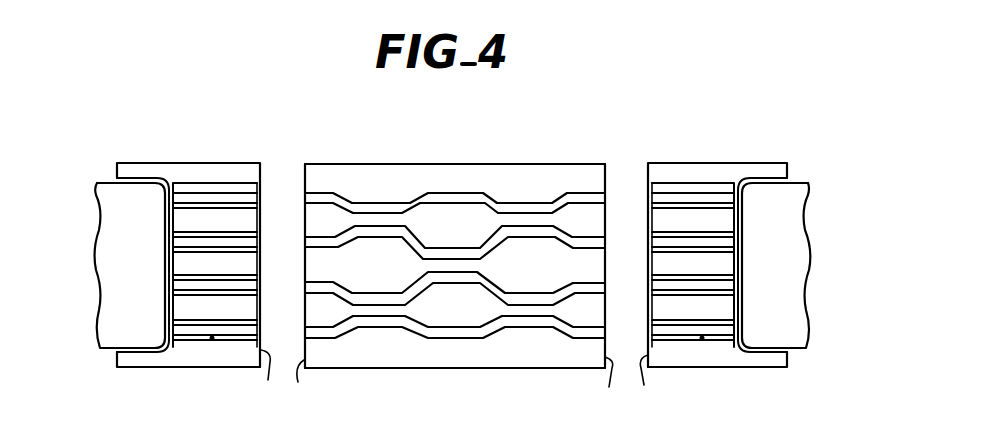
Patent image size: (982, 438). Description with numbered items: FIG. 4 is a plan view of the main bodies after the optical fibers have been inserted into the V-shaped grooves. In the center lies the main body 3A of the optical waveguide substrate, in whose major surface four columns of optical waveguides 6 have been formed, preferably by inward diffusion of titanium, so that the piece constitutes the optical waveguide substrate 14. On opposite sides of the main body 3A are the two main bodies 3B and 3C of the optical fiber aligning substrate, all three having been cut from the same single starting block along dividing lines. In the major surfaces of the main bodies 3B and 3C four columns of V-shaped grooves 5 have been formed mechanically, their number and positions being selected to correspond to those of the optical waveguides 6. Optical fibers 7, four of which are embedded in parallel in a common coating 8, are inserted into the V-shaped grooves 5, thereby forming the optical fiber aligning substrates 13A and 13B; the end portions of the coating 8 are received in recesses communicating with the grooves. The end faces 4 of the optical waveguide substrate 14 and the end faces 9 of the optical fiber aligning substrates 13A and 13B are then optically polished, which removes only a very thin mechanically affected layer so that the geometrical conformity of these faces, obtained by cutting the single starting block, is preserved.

The main body of the optical waveguide substrate 3A is at (487, 362).
The main body of the optical fiber aligning substrate 3B is at (205, 172).
The main body of the optical fiber aligning substrate 3C is at (744, 172).
The end faces of the optical waveguide substrate 4 is at (455, 286).
The V-shaped grooves 5 is at (212, 341).
The optical waveguides 6 is at (491, 248).
The optical fibers 7 is at (224, 240).
The coating 8 is at (112, 190).
The end faces of the optical fiber aligning substrates 9 is at (454, 376).
The optical fiber aligning substrate 13A is at (169, 150).
The optical fiber aligning substrate 13B is at (724, 145).
The optical waveguide substrate 14 is at (440, 163).